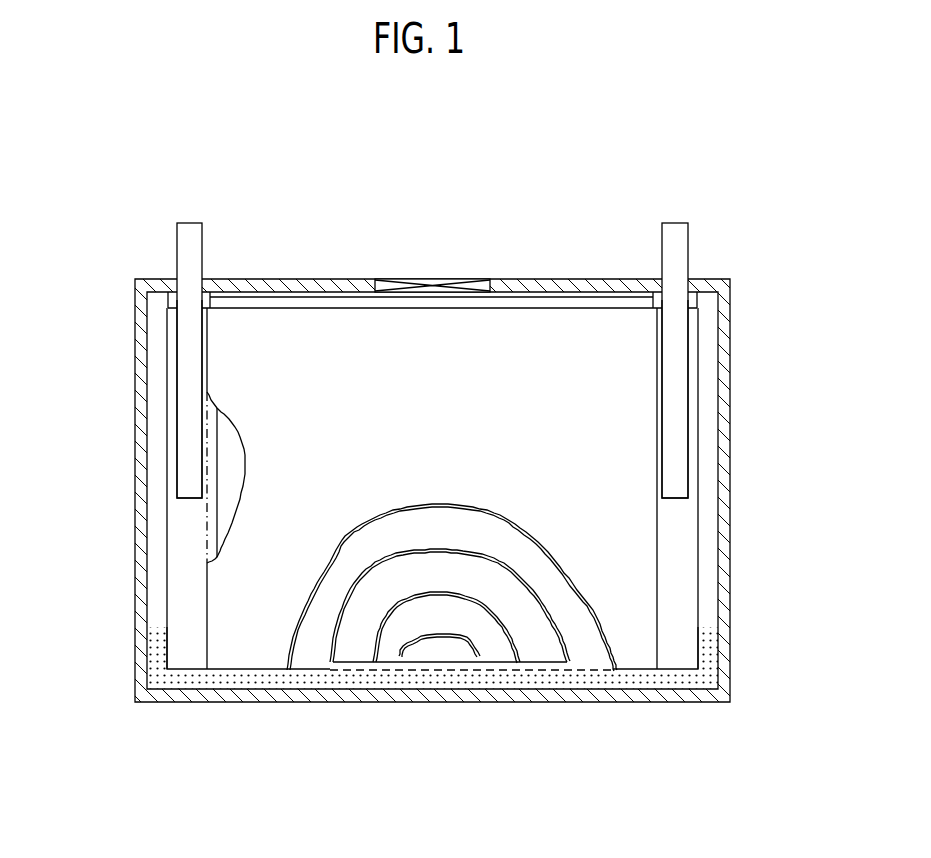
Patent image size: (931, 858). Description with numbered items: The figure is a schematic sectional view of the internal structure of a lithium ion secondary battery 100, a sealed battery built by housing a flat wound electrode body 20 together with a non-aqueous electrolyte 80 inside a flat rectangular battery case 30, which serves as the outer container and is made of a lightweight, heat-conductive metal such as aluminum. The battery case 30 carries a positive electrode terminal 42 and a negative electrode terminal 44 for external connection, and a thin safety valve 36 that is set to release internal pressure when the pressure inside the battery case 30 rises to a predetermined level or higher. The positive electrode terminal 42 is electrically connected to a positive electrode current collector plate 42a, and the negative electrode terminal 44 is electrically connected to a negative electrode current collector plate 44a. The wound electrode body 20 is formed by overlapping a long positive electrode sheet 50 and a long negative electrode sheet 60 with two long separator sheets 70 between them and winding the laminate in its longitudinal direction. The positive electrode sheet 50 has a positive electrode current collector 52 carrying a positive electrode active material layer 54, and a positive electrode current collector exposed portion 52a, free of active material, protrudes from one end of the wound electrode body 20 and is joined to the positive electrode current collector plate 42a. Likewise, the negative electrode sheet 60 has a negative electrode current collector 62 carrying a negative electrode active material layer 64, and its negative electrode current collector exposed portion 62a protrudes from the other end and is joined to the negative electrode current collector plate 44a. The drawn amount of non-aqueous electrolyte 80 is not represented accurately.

The lithium ion secondary battery 100 is at (734, 229).
The wound electrode body 20 is at (315, 328).
The battery case 30 is at (740, 403).
The safety valve 36 is at (432, 278).
The positive electrode terminal 42 is at (190, 228).
The positive electrode current collector plate 42a is at (193, 380).
The negative electrode terminal 44 is at (675, 228).
The negative electrode current collector plate 44a is at (675, 341).
The positive electrode sheet 50 is at (312, 653).
The positive electrode current collector 52 is at (167, 558).
The positive electrode current collector exposed portion 52a is at (183, 643).
The positive electrode active material layer 54 is at (230, 452).
The negative electrode sheet 60 is at (393, 650).
The negative electrode current collector 62 is at (698, 514).
The negative electrode current collector exposed portion 62a is at (682, 563).
The negative electrode active material layer 64 is at (446, 710).
The separator sheet 70 is at (247, 597).
The non-aqueous electrolyte 80 is at (630, 683).